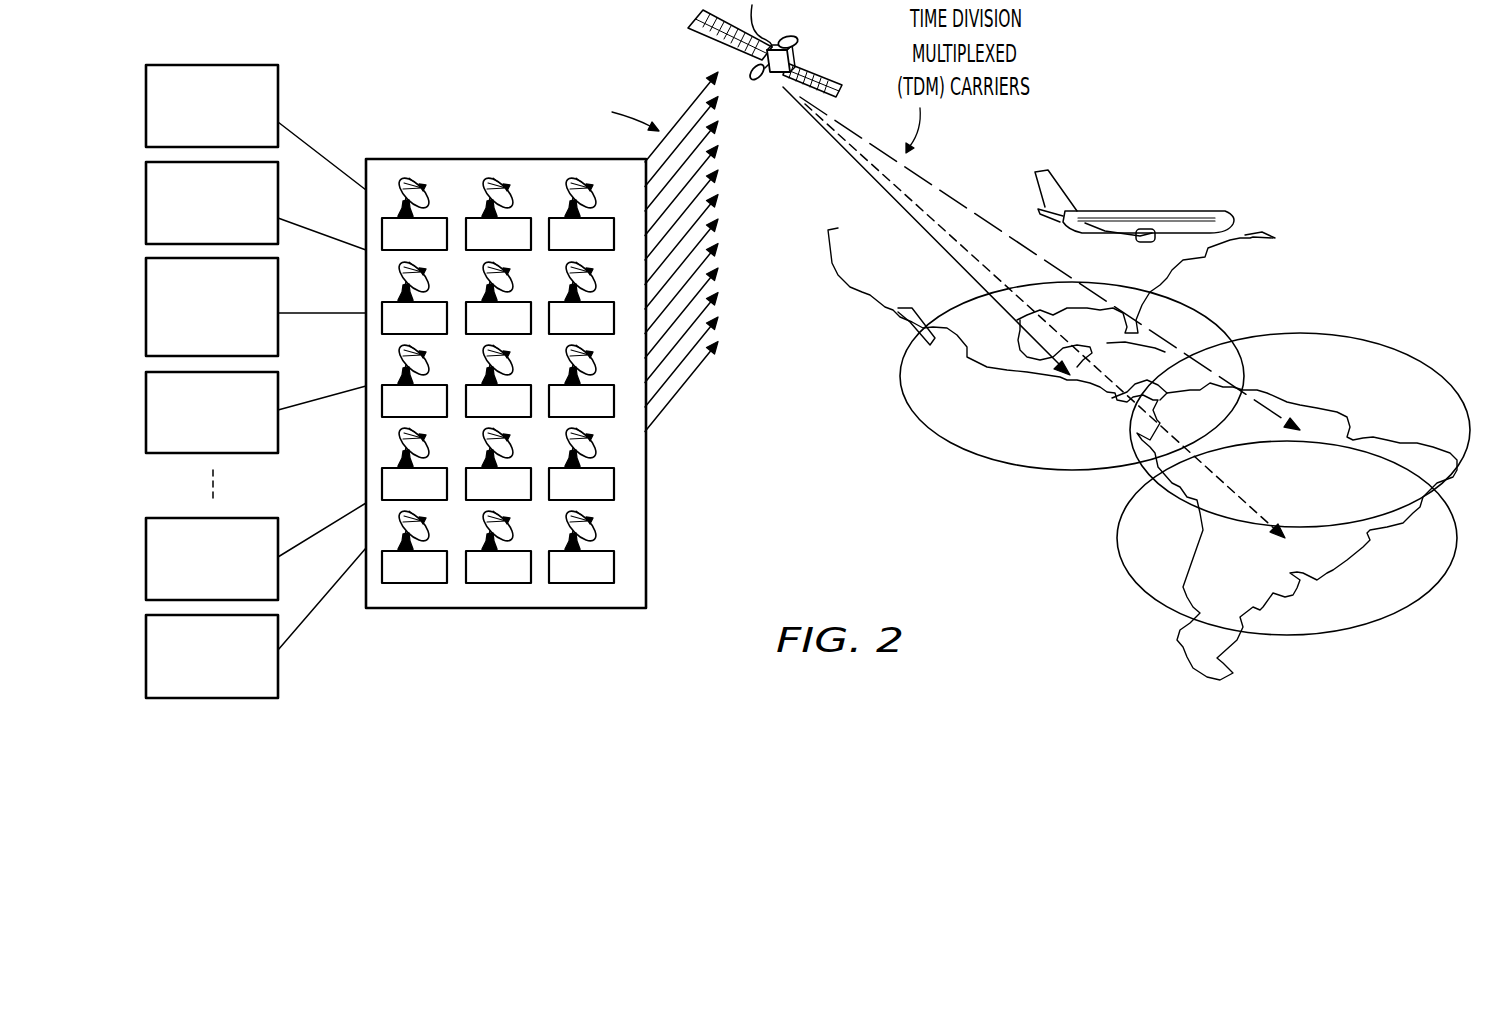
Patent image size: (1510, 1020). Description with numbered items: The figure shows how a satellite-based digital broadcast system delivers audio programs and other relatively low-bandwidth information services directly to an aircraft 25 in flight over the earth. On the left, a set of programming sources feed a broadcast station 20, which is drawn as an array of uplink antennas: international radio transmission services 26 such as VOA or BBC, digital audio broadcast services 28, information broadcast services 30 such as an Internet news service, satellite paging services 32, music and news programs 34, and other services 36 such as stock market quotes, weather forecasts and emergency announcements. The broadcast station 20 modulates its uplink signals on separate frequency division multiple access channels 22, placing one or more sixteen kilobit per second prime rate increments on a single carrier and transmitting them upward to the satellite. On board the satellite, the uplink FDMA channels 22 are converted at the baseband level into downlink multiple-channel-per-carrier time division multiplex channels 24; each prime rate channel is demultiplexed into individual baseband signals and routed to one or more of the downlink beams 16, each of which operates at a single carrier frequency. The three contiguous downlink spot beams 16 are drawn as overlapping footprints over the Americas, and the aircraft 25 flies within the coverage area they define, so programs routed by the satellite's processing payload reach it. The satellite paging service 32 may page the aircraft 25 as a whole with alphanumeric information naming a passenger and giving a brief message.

The downlink spot beams 16 is at (1328, 333).
The broadcast station 20 is at (646, 512).
The frequency division multiple access (FDMA) channels 22 is at (724, 359).
The multiple-channel-per-carrier time division multiplex (MCPC/TDM) channels 24 is at (838, 160).
The aircraft 25 is at (1212, 212).
The international radio transmission services 26 is at (278, 95).
The digital audio broadcast (DAB) services 28 is at (278, 196).
The information broadcast services 30 is at (278, 296).
The satellite paging services 32 is at (278, 386).
The music and news programs 34 is at (278, 578).
The other services 36 is at (278, 686).